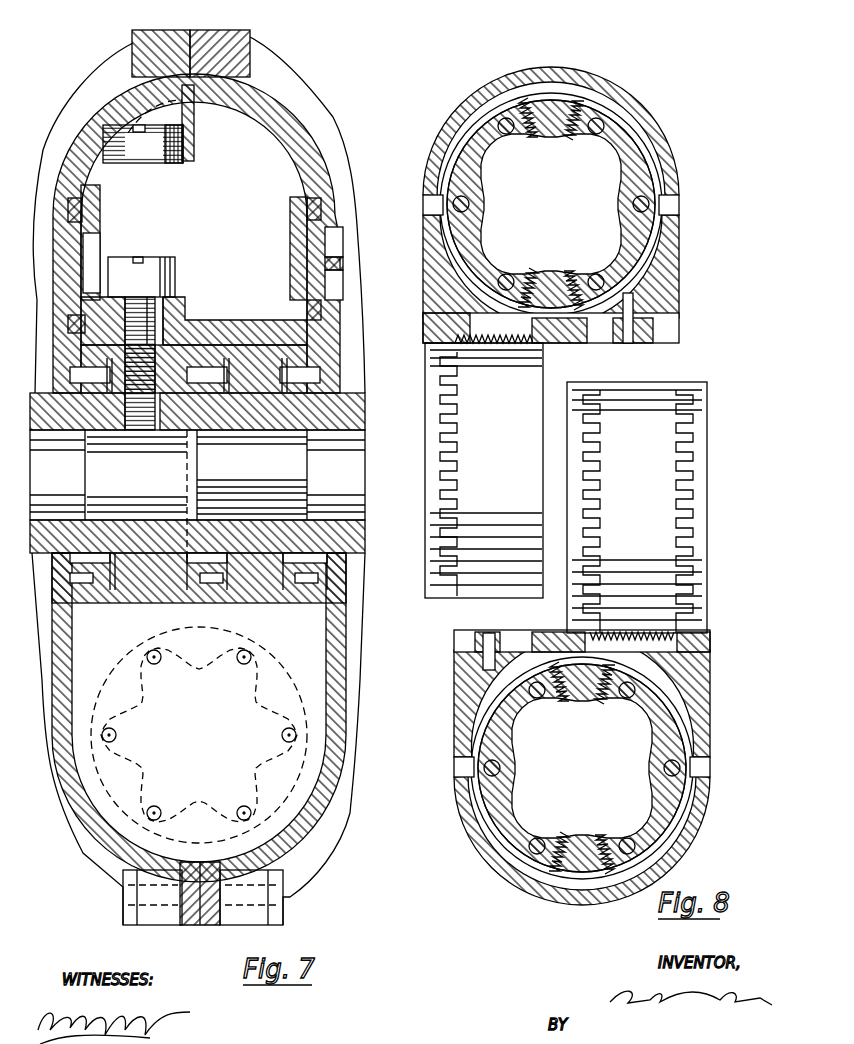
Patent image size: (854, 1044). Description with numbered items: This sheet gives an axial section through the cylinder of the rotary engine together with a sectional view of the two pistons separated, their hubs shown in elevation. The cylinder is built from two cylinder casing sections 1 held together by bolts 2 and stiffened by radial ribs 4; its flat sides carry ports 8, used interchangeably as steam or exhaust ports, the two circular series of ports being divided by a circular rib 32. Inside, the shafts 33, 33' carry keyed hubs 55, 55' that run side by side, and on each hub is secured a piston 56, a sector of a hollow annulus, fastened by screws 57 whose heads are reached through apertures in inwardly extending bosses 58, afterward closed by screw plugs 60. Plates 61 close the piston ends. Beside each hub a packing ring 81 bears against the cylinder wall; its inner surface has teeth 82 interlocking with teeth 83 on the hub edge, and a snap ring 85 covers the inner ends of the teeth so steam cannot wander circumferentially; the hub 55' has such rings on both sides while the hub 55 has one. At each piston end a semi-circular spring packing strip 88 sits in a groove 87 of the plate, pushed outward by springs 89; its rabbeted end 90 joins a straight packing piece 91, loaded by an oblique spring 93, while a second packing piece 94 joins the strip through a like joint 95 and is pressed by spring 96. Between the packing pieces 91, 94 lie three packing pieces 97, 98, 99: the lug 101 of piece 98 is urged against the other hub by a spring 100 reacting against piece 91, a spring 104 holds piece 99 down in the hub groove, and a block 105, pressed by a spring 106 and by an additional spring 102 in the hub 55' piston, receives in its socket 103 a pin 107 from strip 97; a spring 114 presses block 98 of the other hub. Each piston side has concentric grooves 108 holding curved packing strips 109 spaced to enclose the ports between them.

In FIG. 7, the cylinder casing section 1 is at (318, 815).
In FIG. 7, the bolt 2 is at (292, 96).
In FIG. 7, the radial rib 4 is at (110, 865).
In FIG. 7, the port 8 is at (333, 243).
In FIG. 7, the circular rib 32 is at (340, 265).
In FIG. 7, the shaft 33 is at (197, 476).
In FIG. 7, the shaft 33' is at (252, 475).
In FIG. 7, the hub 55 is at (106, 624).
In FIG. 8, the hub 55 is at (484, 470).
In FIG. 7, the hub 55' is at (194, 313).
In FIG. 8, the hub 55' is at (637, 507).
In FIG. 7, the piston 56 is at (302, 150).
In FIG. 8, the piston 56 is at (643, 184).
In FIG. 7, the screw 57 is at (150, 270).
In FIG. 7, the inwardly extending boss 58 is at (167, 160).
In FIG. 7, the screw plug 60 is at (143, 144).
In FIG. 7, the plate 61 is at (199, 735).
In FIG. 8, the plate 61 is at (582, 177).
In FIG. 7, the packing ring 81 is at (300, 600).
In FIG. 8, the packing ring 81 is at (433, 494).
In FIG. 7, the tooth 82 is at (315, 578).
In FIG. 8, the tooth 82 is at (452, 430).
In FIG. 8, the tooth 83 is at (448, 492).
In FIG. 7, the snap ring 85 is at (205, 338).
In FIG. 8, the groove 87 is at (641, 143).
In FIG. 8, the spring packing strip 88 is at (613, 101).
In FIG. 8, the spring 89 is at (513, 103).
In FIG. 8, the rabbeted end 90 is at (440, 205).
In FIG. 8, the packing piece 91 is at (432, 290).
In FIG. 8, the spring 93 is at (440, 315).
In FIG. 8, the packing piece 94 is at (662, 292).
In FIG. 8, the joint 95 is at (668, 207).
In FIG. 8, the spring 96 is at (665, 275).
In FIG. 8, the packing piece 97 is at (630, 343).
In FIG. 8, the packing piece 98 is at (590, 335).
In FIG. 8, the packing piece 99 is at (512, 345).
In FIG. 8, the spring 100 is at (710, 627).
In FIG. 8, the lug 101 is at (472, 340).
In FIG. 8, the spring 102 is at (597, 730).
In FIG. 8, the socket 103 is at (625, 308).
In FIG. 8, the spring 104 is at (588, 697).
In FIG. 8, the block 105 is at (571, 288).
In FIG. 8, the spring 106 is at (607, 263).
In FIG. 8, the pin 107 is at (665, 322).
In FIG. 7, the circular concentric groove 108 is at (300, 210).
In FIG. 7, the packing strip 109 is at (80, 228).
In FIG. 8, the spring 114 is at (547, 280).